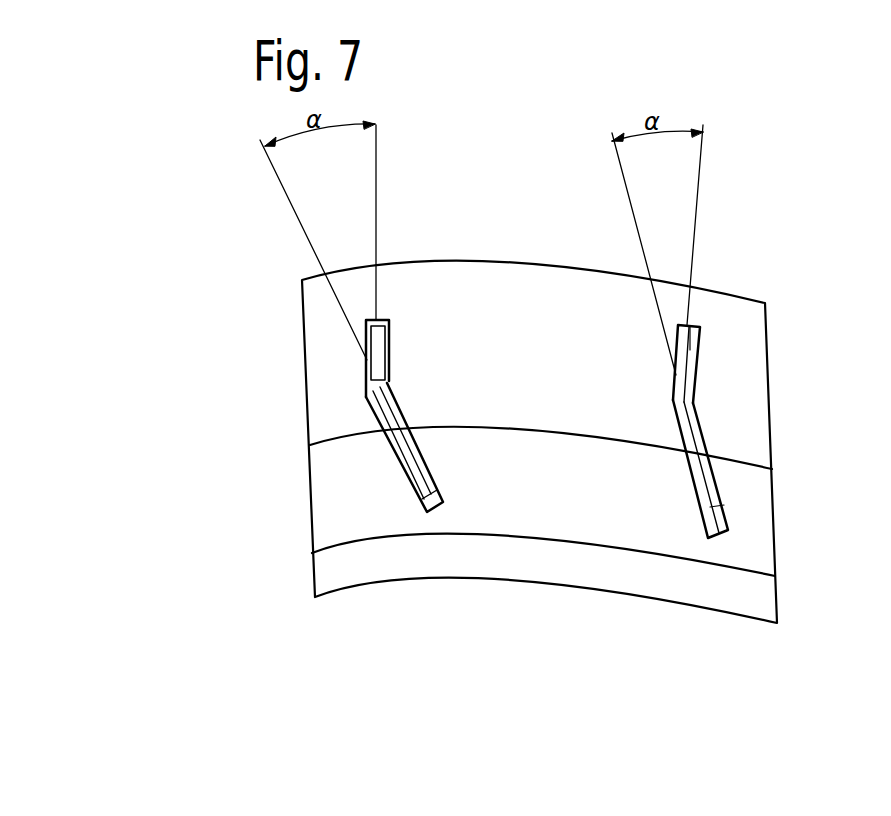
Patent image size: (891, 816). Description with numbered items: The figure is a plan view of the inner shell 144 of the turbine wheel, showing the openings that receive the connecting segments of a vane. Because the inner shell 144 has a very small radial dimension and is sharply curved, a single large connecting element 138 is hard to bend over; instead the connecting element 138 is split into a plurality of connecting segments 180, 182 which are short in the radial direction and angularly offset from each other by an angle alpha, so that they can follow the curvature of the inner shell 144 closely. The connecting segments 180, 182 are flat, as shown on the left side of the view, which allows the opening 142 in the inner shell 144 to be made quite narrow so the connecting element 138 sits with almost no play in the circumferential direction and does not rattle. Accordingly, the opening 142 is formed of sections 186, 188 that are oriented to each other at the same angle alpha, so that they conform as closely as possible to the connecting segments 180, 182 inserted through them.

The connecting element 138 is at (320, 432).
The opening 142 is at (768, 390).
The inner shell 144 is at (500, 495).
The connecting segment 180 is at (413, 477).
The connecting segment 182 is at (367, 332).
The section of opening 186 is at (723, 505).
The section of opening 188 is at (703, 343).